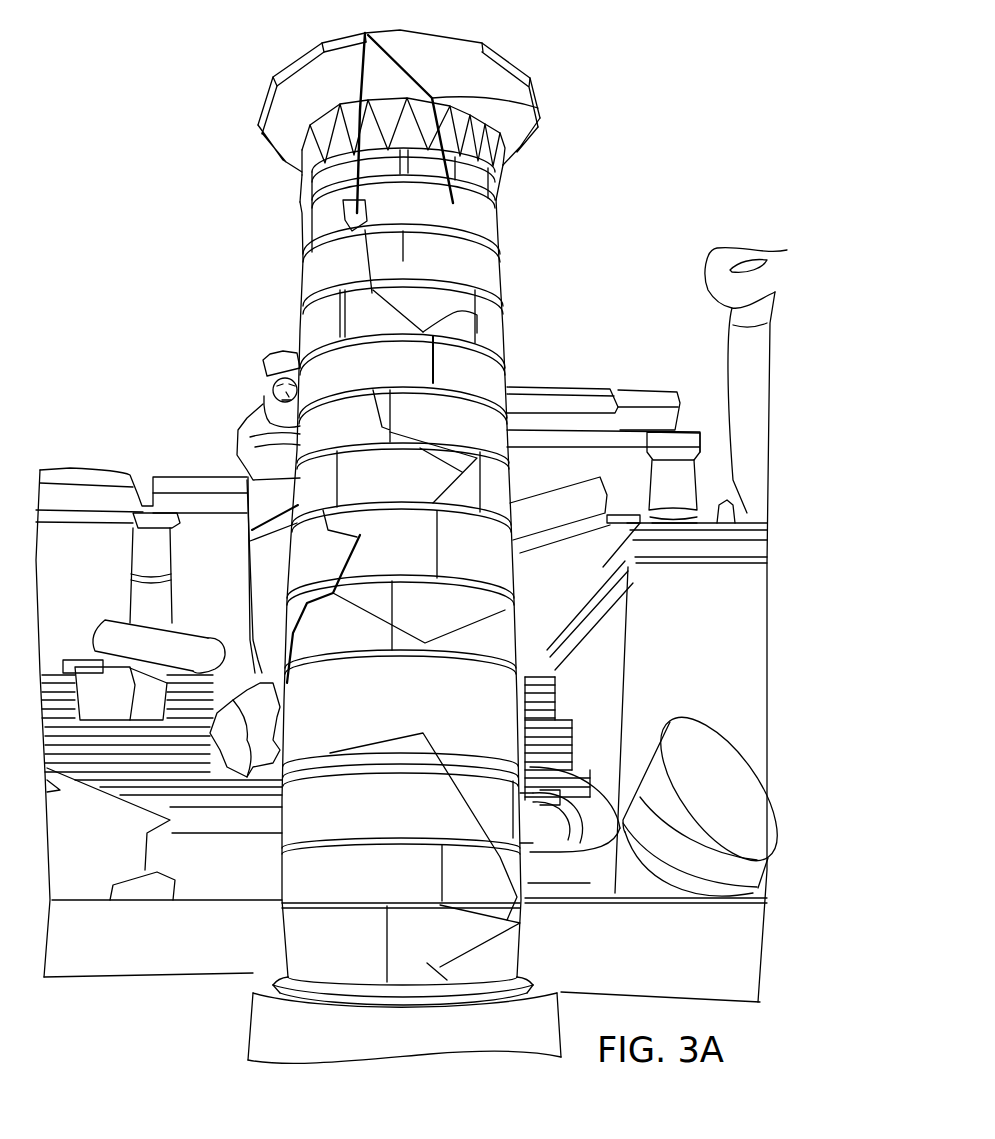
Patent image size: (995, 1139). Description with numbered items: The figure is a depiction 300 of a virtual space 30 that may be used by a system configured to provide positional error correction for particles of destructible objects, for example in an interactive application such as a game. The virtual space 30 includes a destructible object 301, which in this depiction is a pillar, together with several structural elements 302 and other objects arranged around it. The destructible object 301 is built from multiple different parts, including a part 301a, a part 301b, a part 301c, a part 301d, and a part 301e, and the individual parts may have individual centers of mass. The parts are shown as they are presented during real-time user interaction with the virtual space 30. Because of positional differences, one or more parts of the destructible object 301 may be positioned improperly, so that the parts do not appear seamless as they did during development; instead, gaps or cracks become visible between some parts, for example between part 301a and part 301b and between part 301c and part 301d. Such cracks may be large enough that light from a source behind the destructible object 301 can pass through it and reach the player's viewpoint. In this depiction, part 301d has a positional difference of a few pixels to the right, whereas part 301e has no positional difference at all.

The virtual space 30 is at (137, 100).
The depiction 300 is at (122, 1052).
The destructible object 301 is at (232, 1022).
The part 301a is at (256, 124).
The part 301b is at (381, 66).
The part 301c is at (536, 73).
The part 301d is at (544, 125).
The part 301e is at (506, 287).
The structural elements 302 is at (193, 553).